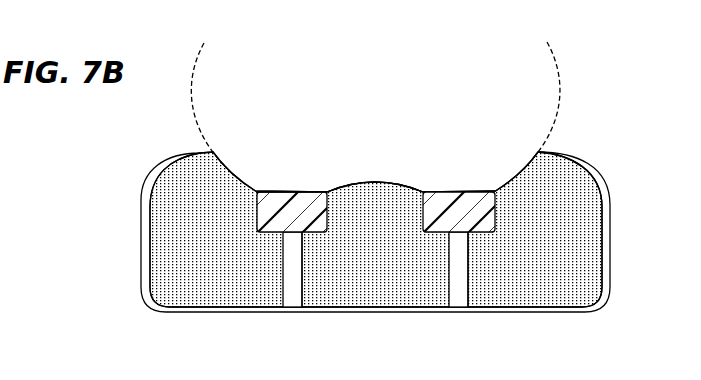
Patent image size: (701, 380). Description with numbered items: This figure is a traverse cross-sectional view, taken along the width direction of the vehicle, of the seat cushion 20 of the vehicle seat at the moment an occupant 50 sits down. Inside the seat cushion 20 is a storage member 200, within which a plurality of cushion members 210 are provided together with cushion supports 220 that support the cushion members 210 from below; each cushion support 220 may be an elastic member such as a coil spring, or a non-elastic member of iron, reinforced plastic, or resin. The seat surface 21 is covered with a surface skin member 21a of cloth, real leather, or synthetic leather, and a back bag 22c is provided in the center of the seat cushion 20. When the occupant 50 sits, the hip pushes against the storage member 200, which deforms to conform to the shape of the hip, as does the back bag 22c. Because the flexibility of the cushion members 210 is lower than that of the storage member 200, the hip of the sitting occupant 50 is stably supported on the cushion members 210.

The occupant 50 is at (557, 70).
The seat cushion 20 is at (612, 238).
The storage member 200 is at (150, 233).
The back bag 22c is at (383, 188).
The seat surface 21 is at (361, 178).
The surface skin member 21a is at (336, 191).
The cushion support 220 is at (292, 300).
The cushion member 210 is at (322, 231).